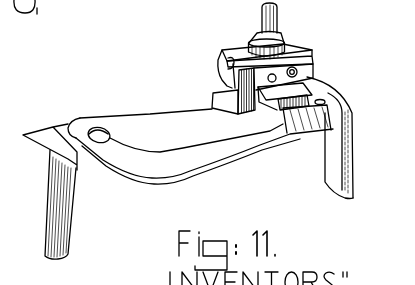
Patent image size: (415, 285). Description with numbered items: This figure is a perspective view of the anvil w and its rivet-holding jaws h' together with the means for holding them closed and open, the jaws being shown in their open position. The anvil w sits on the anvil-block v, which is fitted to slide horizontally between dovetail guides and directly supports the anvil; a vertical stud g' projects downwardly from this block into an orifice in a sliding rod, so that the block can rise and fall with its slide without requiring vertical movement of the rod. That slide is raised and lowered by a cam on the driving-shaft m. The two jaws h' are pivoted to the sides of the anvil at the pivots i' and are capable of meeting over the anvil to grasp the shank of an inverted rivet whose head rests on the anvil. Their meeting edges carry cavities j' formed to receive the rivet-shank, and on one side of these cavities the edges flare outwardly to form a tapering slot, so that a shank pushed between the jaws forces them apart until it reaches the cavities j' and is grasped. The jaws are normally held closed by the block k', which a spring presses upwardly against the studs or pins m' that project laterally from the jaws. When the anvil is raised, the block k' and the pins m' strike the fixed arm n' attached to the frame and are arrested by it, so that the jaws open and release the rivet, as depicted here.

The anvil w is at (244, 51).
The block h is at (242, 79).
The jaws h' is at (298, 70).
The aperture i'' is at (286, 50).
The aperture with bushing j'' is at (302, 49).
The cavities j' is at (214, 99).
The pivots i' is at (200, 109).
The anvil block v is at (153, 125).
The vertical stud g' is at (41, 191).
The block k' is at (285, 129).
The studs or pins m' is at (297, 134).
The fixed arm n' is at (335, 132).
The driving-shaft m is at (343, 107).